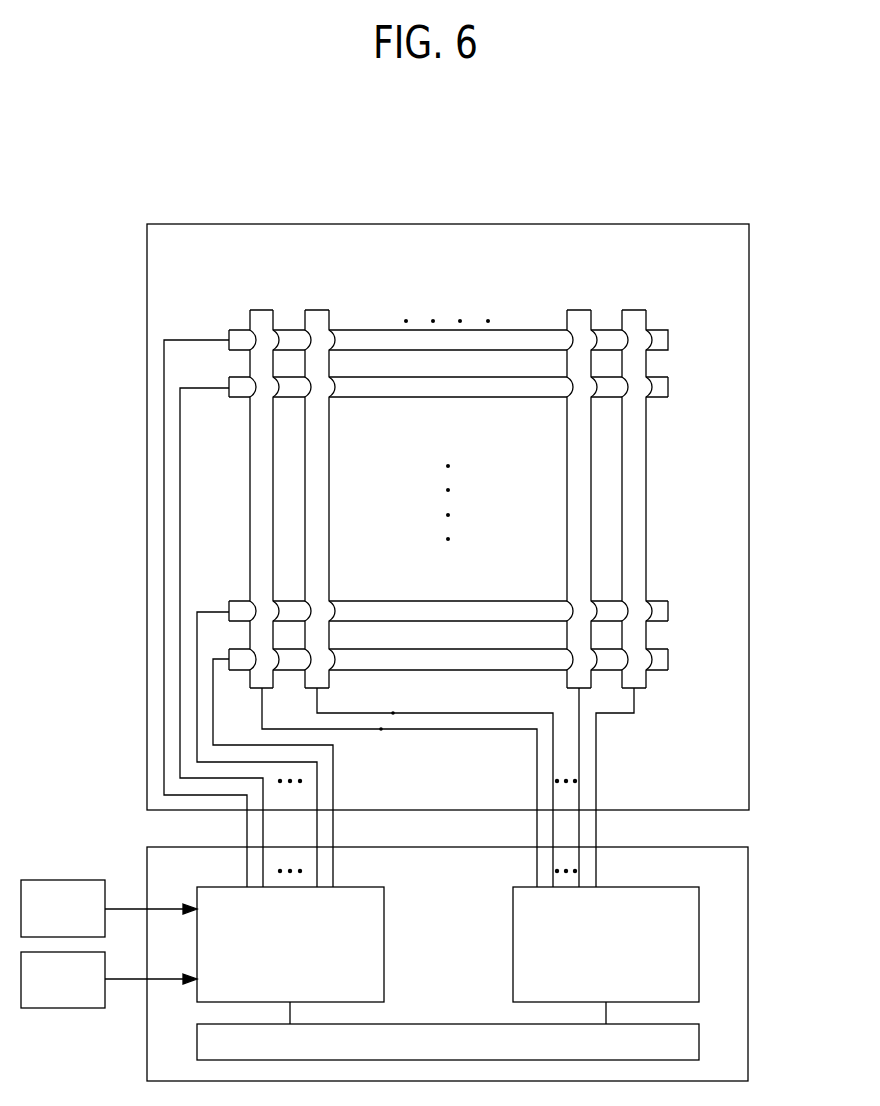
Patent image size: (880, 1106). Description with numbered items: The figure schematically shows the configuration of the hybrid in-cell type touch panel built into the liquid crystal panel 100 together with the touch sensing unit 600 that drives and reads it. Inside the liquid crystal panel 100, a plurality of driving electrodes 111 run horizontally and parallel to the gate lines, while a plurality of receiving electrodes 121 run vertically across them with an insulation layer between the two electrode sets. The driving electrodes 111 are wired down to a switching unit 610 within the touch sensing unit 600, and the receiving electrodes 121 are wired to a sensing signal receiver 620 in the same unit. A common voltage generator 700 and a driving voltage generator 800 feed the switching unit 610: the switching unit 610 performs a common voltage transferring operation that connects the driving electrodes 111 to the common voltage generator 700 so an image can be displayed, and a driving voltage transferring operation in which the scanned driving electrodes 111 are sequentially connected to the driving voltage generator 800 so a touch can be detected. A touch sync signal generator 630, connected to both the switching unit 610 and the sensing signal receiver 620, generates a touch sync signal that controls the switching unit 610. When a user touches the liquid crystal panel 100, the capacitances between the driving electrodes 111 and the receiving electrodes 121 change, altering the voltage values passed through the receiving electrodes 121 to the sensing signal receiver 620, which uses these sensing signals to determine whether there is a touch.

The liquid crystal panel 100 is at (749, 517).
The driving electrodes 111 is at (668, 330).
The receiving electrodes 121 is at (632, 310).
The touch sensing unit 600 is at (748, 907).
The switching unit 610 is at (305, 955).
The sensing signal receiver 620 is at (621, 955).
The touch sync signal generator 630 is at (464, 1053).
The common voltage generator 700 is at (79, 920).
The driving voltage generator 800 is at (79, 992).